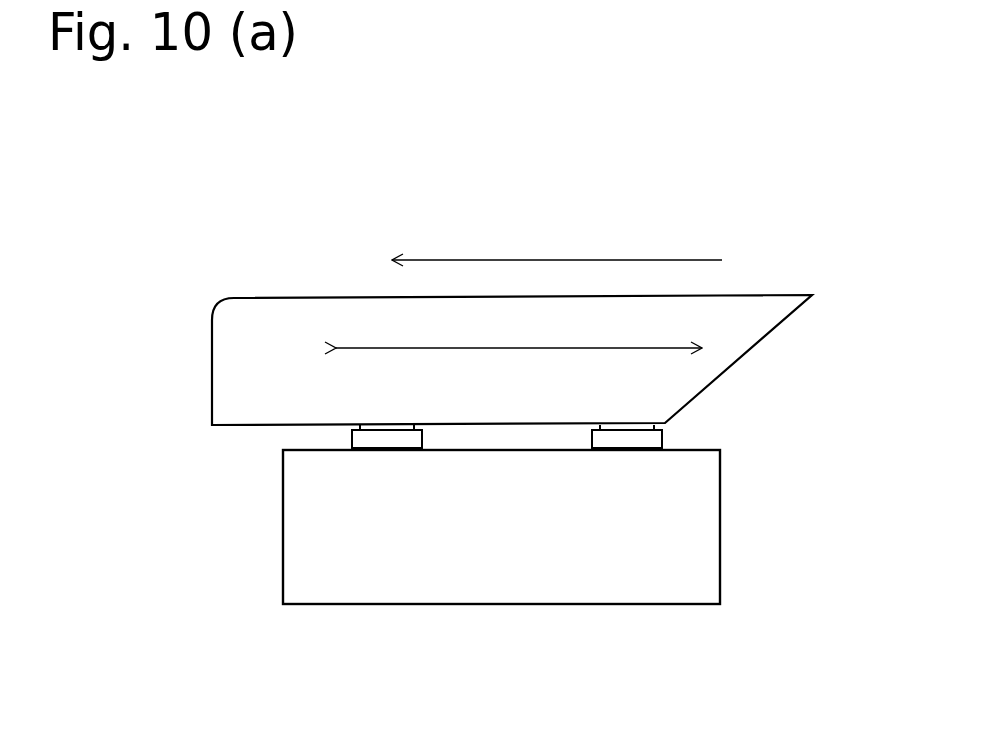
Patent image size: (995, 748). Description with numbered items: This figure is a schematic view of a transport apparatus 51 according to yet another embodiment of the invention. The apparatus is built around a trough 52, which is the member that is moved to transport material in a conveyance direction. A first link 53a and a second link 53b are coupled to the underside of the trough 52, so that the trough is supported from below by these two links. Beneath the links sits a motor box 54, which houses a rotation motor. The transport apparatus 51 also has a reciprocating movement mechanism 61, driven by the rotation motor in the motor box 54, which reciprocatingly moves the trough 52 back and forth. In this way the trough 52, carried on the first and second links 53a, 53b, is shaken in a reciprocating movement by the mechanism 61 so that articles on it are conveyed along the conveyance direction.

The transport apparatus 51 is at (600, 128).
The trough 52 is at (300, 315).
The first link 53a is at (363, 438).
The second link 53b is at (638, 434).
The motor box 54 is at (335, 585).
The reciprocating movement mechanism 61 is at (690, 206).